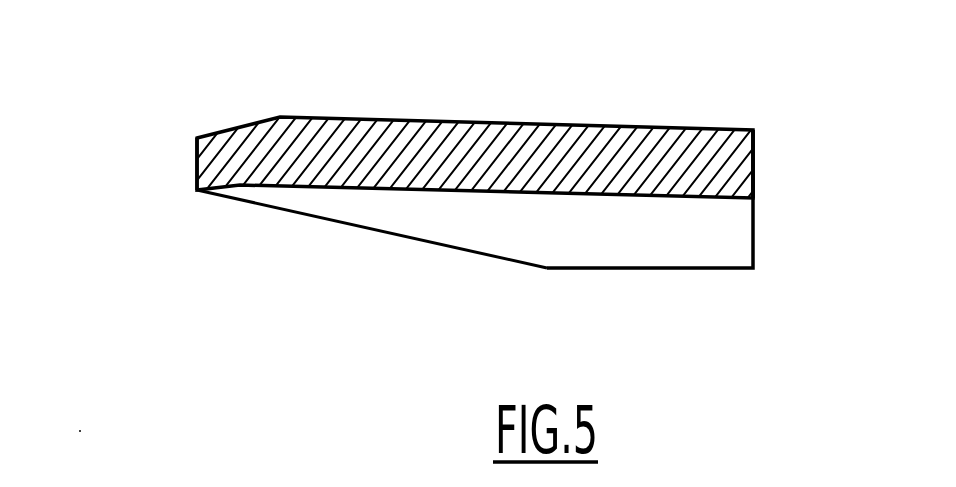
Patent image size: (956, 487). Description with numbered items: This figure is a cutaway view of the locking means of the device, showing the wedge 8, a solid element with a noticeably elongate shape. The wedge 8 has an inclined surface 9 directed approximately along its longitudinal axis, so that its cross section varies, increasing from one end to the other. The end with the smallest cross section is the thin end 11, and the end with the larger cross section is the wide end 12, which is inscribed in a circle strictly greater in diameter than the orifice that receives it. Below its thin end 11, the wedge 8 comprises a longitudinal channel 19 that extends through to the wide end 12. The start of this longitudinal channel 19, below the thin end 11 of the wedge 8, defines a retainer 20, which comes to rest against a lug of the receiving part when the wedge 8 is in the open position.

The wedge 8 is at (578, 155).
The inclined surface 9 is at (432, 243).
The thin end 11 is at (197, 151).
The wide end 12 is at (755, 162).
The longitudinal channel 19 is at (677, 243).
The retainer 20 is at (232, 187).